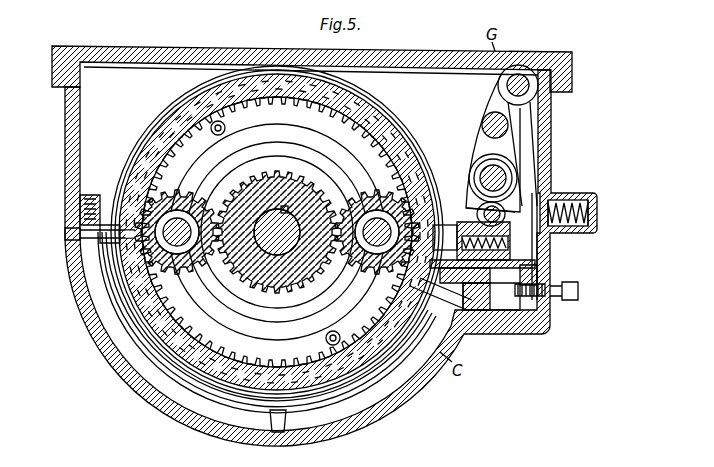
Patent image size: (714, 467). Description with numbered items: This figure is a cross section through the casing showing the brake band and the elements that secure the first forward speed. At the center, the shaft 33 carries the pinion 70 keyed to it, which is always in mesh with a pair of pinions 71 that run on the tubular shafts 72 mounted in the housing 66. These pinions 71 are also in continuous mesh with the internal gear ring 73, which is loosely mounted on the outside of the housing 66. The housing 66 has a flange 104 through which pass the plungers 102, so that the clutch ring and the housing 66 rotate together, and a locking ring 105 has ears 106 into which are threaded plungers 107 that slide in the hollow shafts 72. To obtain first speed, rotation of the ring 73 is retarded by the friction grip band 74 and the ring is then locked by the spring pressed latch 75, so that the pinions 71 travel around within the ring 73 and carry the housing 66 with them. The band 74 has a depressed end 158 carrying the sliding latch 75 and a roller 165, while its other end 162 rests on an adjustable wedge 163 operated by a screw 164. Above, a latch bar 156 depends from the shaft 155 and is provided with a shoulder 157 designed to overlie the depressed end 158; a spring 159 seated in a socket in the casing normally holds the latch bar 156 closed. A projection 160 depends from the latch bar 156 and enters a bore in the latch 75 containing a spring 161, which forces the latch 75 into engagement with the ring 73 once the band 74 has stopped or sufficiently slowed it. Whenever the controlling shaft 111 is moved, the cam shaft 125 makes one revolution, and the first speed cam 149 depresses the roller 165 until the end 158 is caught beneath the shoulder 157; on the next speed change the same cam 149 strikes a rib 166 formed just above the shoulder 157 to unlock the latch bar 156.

The shaft 33 is at (284, 240).
The housing 66 is at (190, 182).
The pinion 70 is at (262, 284).
The pinions 71 is at (178, 276).
The tubular shafts 72 is at (200, 212).
The internal gear ring 73 is at (396, 376).
The friction grip band 74 is at (407, 132).
The spring pressed latch 75 is at (448, 300).
The plungers 102 is at (226, 128).
The flange of the housing 104 is at (342, 141).
The locking ring 105 is at (213, 296).
The ears 106 is at (92, 195).
The plungers 107 is at (126, 258).
The controlling shaft 111 is at (500, 128).
The cam shaft 125 is at (506, 178).
The first speed cam 149 is at (516, 168).
The shaft 155 is at (530, 86).
The latch bar 156 is at (528, 137).
The shoulder 157 is at (560, 198).
The depressed end 158 is at (472, 190).
The spring 159 is at (596, 212).
The projection 160 is at (556, 240).
The spring 161 is at (553, 252).
The end of the band 162 is at (538, 275).
The adjustable wedge 163 is at (500, 318).
The screw 164 is at (566, 298).
The roller 165 is at (494, 131).
The rib 166 is at (505, 210).